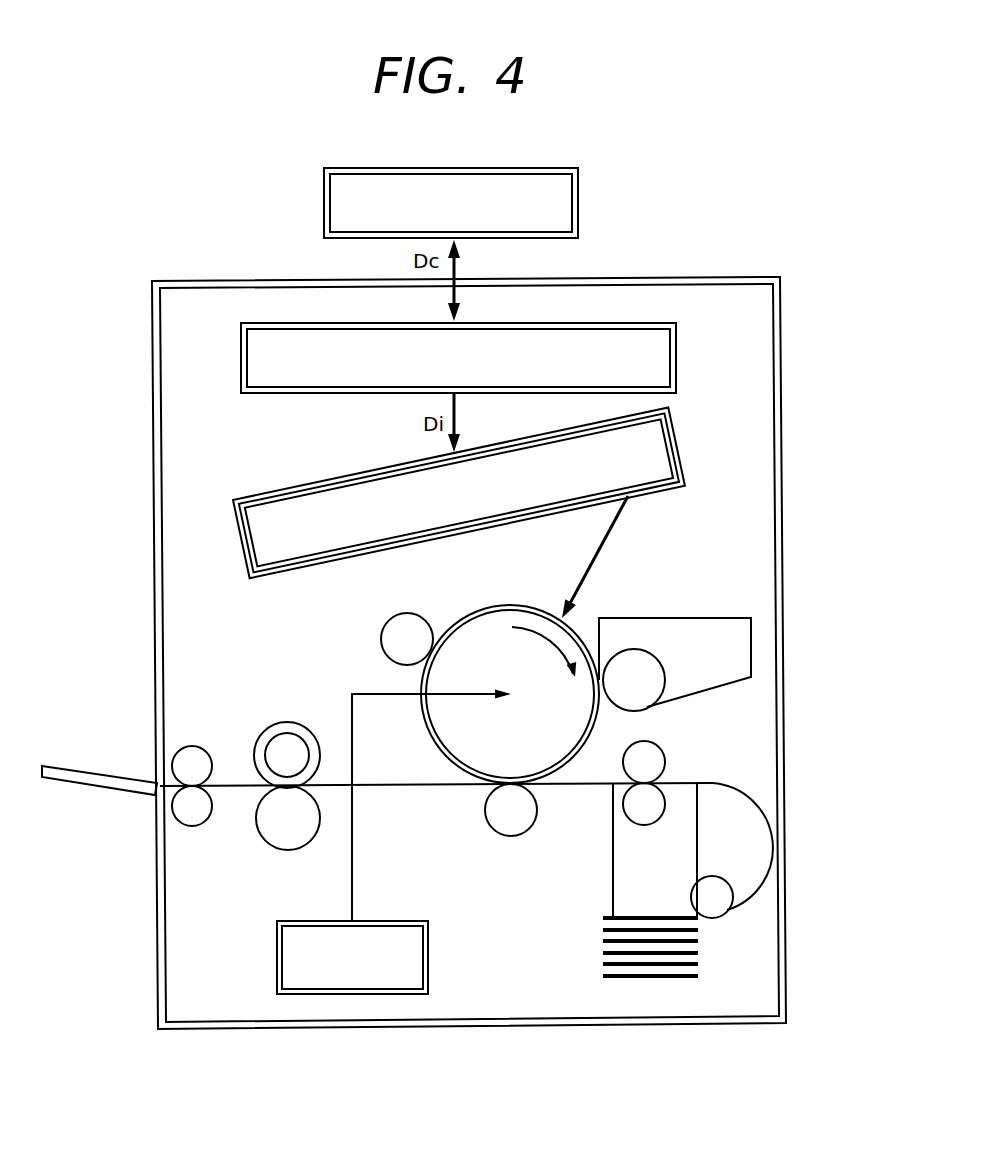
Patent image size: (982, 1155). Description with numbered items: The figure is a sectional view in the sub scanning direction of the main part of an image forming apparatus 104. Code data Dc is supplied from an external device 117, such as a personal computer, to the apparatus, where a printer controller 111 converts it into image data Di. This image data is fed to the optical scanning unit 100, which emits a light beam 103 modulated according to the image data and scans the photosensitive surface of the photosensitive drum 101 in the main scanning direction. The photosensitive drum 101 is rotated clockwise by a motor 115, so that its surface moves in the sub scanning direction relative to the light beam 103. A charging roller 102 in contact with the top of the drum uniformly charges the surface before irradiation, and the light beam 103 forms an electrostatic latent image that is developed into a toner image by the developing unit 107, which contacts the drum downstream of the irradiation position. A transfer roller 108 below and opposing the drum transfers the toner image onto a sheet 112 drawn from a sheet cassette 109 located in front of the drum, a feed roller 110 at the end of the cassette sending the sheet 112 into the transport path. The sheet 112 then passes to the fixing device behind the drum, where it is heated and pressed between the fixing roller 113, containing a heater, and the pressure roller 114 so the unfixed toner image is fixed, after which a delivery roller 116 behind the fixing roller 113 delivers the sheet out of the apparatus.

The optical scanning unit 100 is at (320, 481).
The photosensitive drum 101 is at (582, 718).
The charging roller 102 is at (407, 620).
The light beam 103 is at (603, 548).
The image forming apparatus 104 is at (738, 264).
The developing unit 107 is at (751, 630).
The transfer roller 108 is at (517, 828).
The sheet cassette 109 is at (590, 958).
The feed roller 110 is at (708, 896).
The printer controller 111 is at (676, 345).
The sheet 112 is at (400, 787).
The fixing roller 113 is at (280, 745).
The pressure roller 114 is at (267, 827).
The motor 115 is at (277, 958).
The delivery roller 116 is at (202, 757).
The external device 117 is at (578, 189).